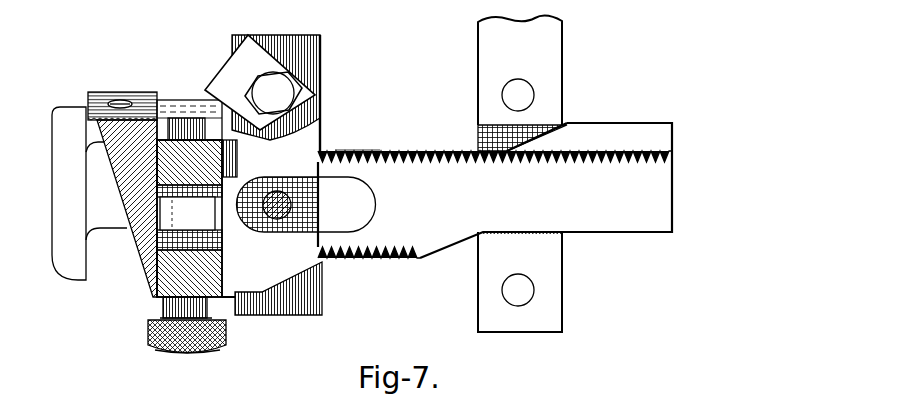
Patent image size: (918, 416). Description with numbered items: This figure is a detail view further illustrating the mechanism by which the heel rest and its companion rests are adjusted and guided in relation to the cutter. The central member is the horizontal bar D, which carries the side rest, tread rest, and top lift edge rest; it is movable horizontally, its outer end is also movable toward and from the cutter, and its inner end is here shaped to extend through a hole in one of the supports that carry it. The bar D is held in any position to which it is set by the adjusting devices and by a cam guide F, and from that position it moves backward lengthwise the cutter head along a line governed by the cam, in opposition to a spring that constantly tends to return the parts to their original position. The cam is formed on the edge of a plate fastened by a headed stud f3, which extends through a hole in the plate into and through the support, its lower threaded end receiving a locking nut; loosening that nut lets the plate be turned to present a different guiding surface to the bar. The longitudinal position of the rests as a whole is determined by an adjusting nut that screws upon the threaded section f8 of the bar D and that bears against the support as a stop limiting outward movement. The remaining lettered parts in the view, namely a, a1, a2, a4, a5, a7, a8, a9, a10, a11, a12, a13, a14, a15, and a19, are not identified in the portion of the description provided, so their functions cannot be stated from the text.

The bar D is at (495, 190).
The clamping jaw a is at (481, 135).
The bracket a1 is at (565, 92).
The housing block a2 is at (322, 66).
The lower housing block a4 is at (322, 303).
The slide head a5 is at (296, 207).
The pivot pin a7 is at (343, 223).
The threaded sleeve a8 is at (222, 272).
The wedge a9 is at (130, 273).
The cap plate a10 is at (101, 96).
The cap screw a11 is at (124, 9).
The recess a12 is at (187, 213).
The spacer a13 is at (222, 176).
The knurled adjusting knob a14 is at (226, 348).
The upper collar a15 is at (172, 108).
The end plate a19 is at (69, 193).
The cam guide F is at (260, 82).
The headed stud f3 is at (273, 93).
The threaded section f8 is at (355, 150).